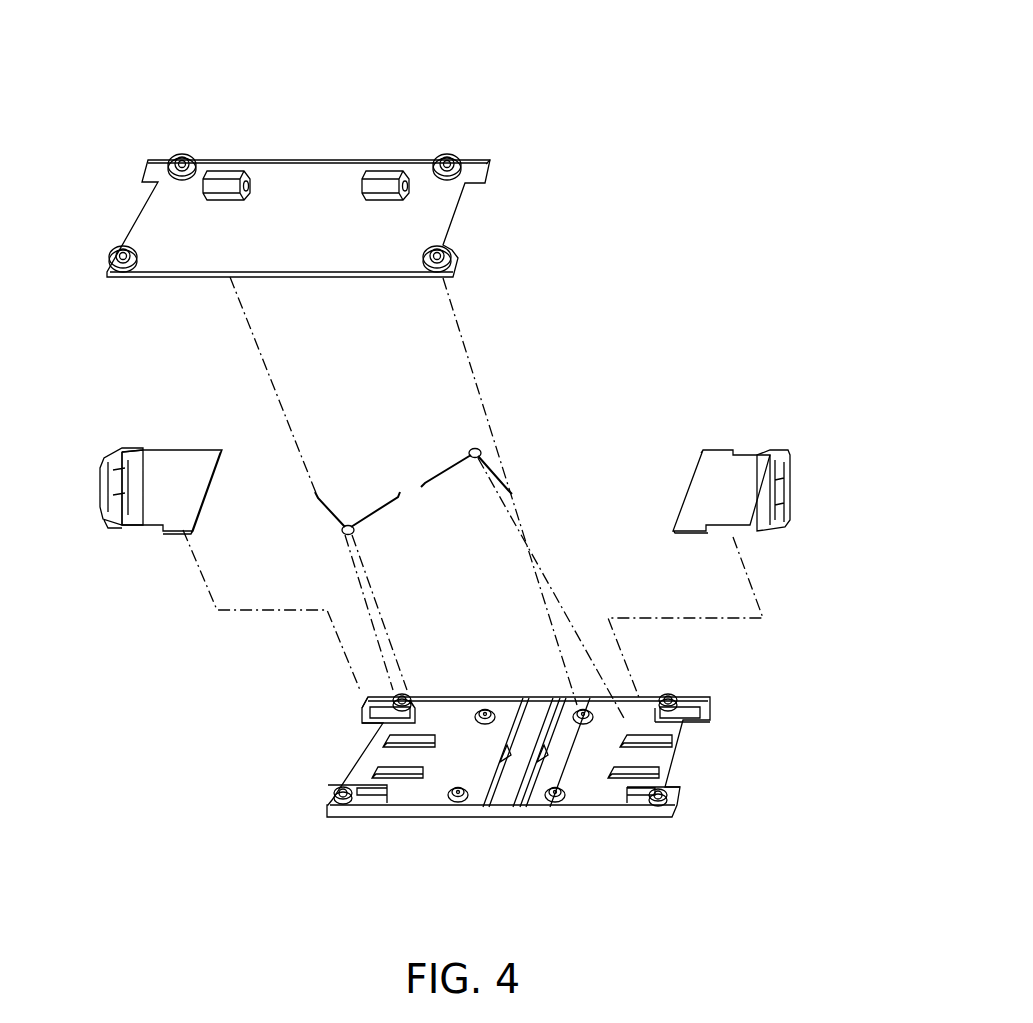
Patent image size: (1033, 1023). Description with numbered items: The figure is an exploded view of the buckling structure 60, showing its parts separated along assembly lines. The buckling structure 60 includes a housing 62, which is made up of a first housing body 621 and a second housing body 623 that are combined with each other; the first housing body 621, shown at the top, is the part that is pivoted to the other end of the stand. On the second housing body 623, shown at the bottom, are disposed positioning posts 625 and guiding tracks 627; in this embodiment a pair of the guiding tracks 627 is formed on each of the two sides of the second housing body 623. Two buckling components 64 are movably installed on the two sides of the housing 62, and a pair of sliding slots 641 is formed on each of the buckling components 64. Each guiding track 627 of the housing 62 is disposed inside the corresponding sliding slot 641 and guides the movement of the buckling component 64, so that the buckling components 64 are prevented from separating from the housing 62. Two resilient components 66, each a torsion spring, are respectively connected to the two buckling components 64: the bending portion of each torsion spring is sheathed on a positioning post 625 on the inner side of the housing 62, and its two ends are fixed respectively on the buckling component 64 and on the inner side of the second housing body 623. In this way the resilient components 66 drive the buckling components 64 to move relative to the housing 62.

The buckling structure 60 is at (650, 80).
The housing 62 is at (647, 250).
The first housing body 621 is at (460, 213).
The second housing body 623 is at (693, 700).
The positioning post 625 is at (577, 708).
The guiding track 627 is at (413, 698).
The buckling component 64 is at (104, 440).
The sliding slot 641 is at (168, 440).
The resilient component 66 is at (372, 510).